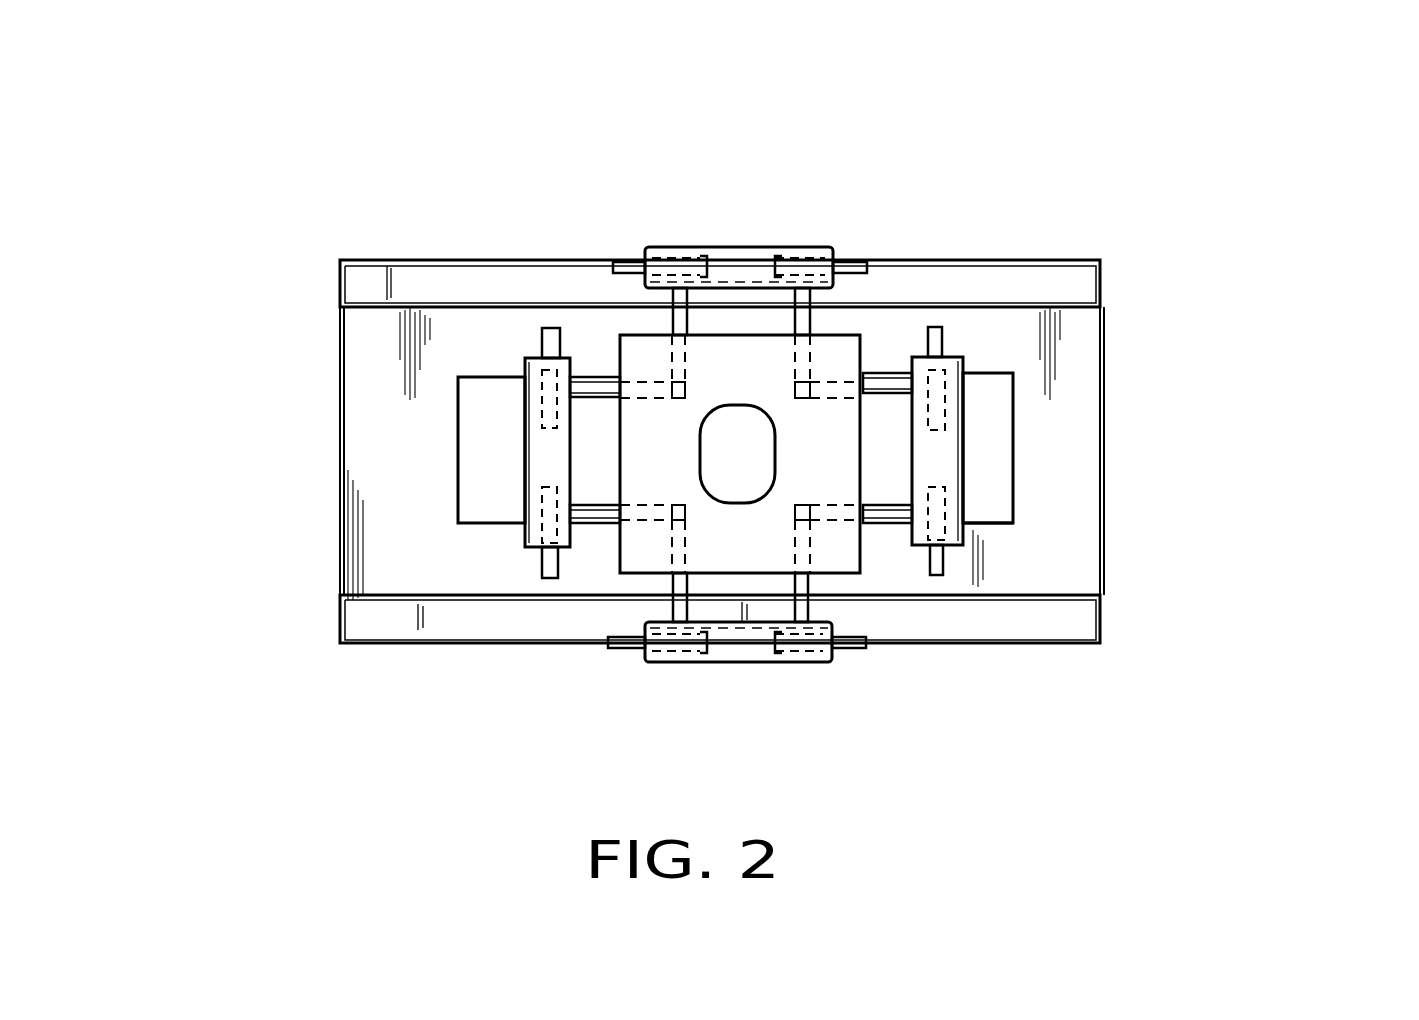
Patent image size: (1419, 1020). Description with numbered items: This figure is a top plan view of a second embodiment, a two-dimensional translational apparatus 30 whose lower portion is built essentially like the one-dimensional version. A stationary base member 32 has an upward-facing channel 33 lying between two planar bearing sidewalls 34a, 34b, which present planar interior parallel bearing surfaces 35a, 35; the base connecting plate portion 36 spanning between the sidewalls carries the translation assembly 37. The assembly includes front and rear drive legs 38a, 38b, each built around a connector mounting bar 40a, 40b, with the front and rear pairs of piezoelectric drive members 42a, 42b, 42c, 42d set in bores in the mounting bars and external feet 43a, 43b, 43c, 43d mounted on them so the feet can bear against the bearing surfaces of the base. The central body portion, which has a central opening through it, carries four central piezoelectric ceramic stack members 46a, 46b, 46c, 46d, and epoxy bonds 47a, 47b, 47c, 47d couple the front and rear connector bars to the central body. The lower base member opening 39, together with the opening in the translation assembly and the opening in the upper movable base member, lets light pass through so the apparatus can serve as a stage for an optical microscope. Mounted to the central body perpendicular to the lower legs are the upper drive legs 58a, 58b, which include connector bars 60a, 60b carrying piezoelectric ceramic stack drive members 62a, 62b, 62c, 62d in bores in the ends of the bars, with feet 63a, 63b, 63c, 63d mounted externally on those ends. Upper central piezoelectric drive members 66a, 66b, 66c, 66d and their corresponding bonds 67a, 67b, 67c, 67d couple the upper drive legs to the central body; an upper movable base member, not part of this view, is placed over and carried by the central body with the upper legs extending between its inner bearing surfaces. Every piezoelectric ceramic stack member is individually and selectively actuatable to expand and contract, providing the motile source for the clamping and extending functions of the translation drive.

The two-dimensional translational apparatus 30 is at (1212, 114).
The stationary base member 32 is at (412, 262).
The channel 33 is at (1082, 533).
The planar bearing sidewall 34a is at (1068, 280).
The planar bearing sidewall 34b is at (1082, 613).
The planar interior parallel bearing surface 35 is at (385, 597).
The planar interior parallel bearing surface 35a is at (363, 312).
The base connecting plate portion 36 is at (340, 540).
The translation assembly 37 is at (707, 245).
The front drive leg 38a is at (520, 402).
The rear drive leg 38b is at (970, 394).
The lower base member opening 39 is at (966, 518).
The front connector mounting bar 40a is at (520, 508).
The rear connector mounting bar 40b is at (965, 505).
The piezoelectric drive member 42a is at (545, 412).
The piezoelectric drive member 42b is at (545, 488).
The piezoelectric drive member 42c is at (942, 418).
The piezoelectric drive member 42d is at (945, 488).
The external foot 43a is at (543, 333).
The external foot 43b is at (542, 573).
The external foot 43c is at (942, 330).
The external foot 43d is at (963, 574).
The central piezoelectric ceramic stack member 46a is at (648, 400).
The central piezoelectric ceramic stack member 46b is at (672, 520).
The central piezoelectric ceramic stack member 46c is at (822, 398).
The central piezoelectric ceramic stack member 46d is at (848, 507).
The epoxy bond 47a is at (577, 376).
The epoxy bond 47b is at (572, 523).
The epoxy bond 47c is at (905, 373).
The epoxy bond 47d is at (908, 524).
The upper drive leg 58a is at (732, 245).
The upper drive leg 58b is at (773, 665).
The connector bar 60a is at (750, 262).
The connector bar 60b is at (798, 668).
The piezoelectric ceramic stack drive member 62a is at (680, 262).
The piezoelectric ceramic stack drive member 62b is at (710, 667).
The piezoelectric ceramic stack drive member 62c is at (802, 265).
The piezoelectric ceramic stack drive member 62d is at (818, 645).
The foot 63a is at (613, 260).
The foot 63b is at (610, 648).
The foot 63c is at (862, 262).
The foot 63d is at (868, 644).
The upper central piezoelectric drive member 66a is at (668, 370).
The upper central piezoelectric drive member 66b is at (690, 520).
The upper central piezoelectric drive member 66c is at (790, 348).
The upper central piezoelectric drive member 66d is at (790, 560).
The bond 67a is at (663, 293).
The bond 67b is at (663, 613).
The bond 67c is at (812, 293).
The bond 67d is at (810, 607).